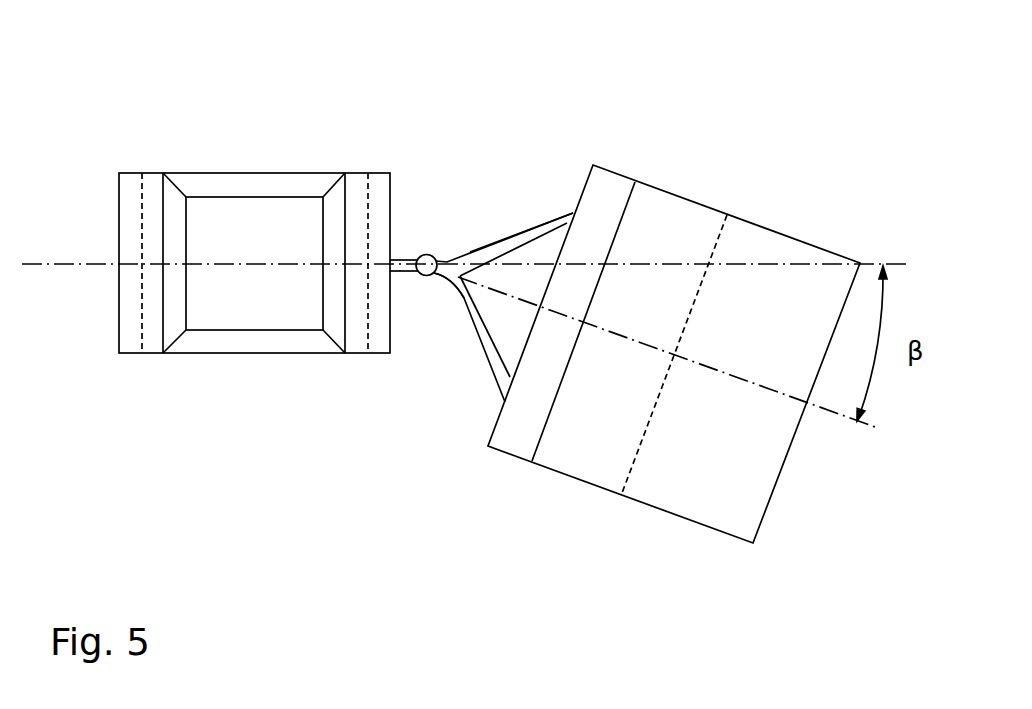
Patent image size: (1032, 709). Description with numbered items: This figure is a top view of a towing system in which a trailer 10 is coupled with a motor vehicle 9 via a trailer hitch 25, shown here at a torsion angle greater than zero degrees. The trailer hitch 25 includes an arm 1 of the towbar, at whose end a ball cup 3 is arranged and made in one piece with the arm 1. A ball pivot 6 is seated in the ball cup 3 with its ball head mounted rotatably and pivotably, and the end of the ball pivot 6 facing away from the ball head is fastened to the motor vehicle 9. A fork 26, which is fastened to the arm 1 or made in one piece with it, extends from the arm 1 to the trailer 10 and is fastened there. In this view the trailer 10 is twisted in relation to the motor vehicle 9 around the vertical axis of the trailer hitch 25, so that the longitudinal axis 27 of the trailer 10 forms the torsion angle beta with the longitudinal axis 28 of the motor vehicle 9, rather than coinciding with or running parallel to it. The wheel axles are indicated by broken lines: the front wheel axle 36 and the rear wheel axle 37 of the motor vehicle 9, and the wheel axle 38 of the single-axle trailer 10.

The arm 1 is at (448, 261).
The ball cup 3 is at (428, 254).
The ball pivot 6 is at (403, 258).
The motor vehicle 9 is at (258, 223).
The trailer 10 is at (588, 425).
The trailer hitch 25 is at (423, 276).
The fork 26 is at (542, 233).
The longitudinal axis of the trailer 27 is at (712, 372).
The longitudinal axis of the motor vehicle 28 is at (66, 262).
The front wheel axle of the motor vehicle 36 is at (142, 323).
The rear wheel axle of the motor vehicle 37 is at (368, 328).
The wheel axle of the trailer 38 is at (715, 243).